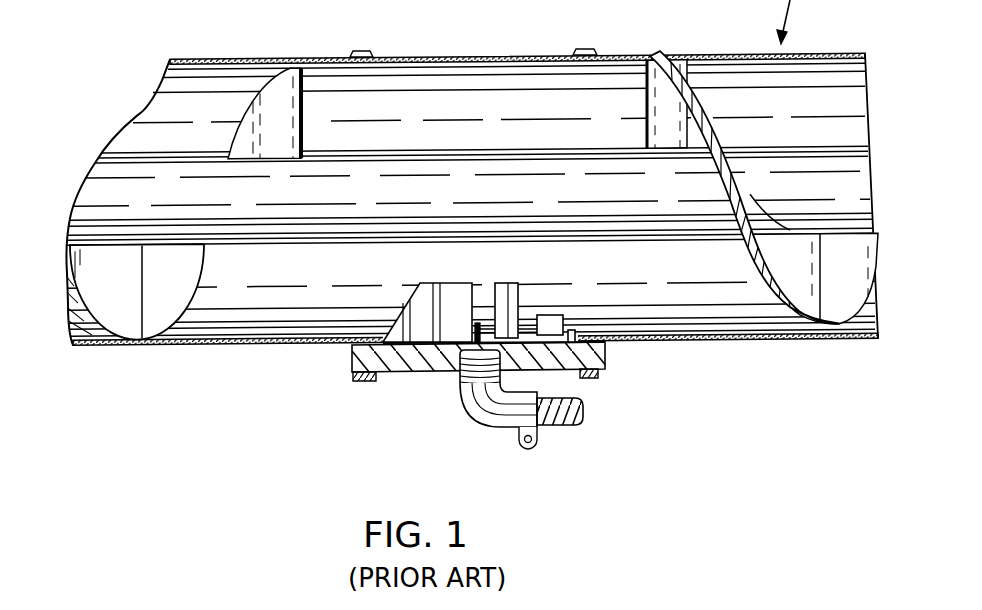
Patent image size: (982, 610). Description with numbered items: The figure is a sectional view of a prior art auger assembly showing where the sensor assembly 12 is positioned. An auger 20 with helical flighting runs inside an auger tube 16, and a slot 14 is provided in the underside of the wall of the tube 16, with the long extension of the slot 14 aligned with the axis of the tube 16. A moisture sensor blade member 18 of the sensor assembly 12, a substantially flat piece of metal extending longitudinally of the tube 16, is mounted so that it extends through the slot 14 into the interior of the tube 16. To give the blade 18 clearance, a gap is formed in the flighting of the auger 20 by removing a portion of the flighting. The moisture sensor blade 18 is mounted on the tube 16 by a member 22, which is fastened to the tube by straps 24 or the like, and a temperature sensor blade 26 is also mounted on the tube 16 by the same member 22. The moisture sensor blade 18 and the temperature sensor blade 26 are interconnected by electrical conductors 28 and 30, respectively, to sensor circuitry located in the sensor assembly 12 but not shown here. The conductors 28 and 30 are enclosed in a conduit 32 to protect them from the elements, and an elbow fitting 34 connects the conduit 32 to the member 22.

The sensor assembly 12 is at (482, 327).
The slot 14 is at (573, 330).
The auger tube 16 is at (752, 53).
The moisture sensor blade member 18 is at (420, 285).
The auger 20 is at (143, 170).
The member 22 is at (605, 348).
The straps 24 is at (353, 51).
The temperature sensor blade 26 is at (548, 315).
The electrical conductor 28 is at (477, 323).
The electrical conductor 30 is at (507, 283).
The conduit 32 is at (558, 430).
The elbow fitting 34 is at (467, 410).